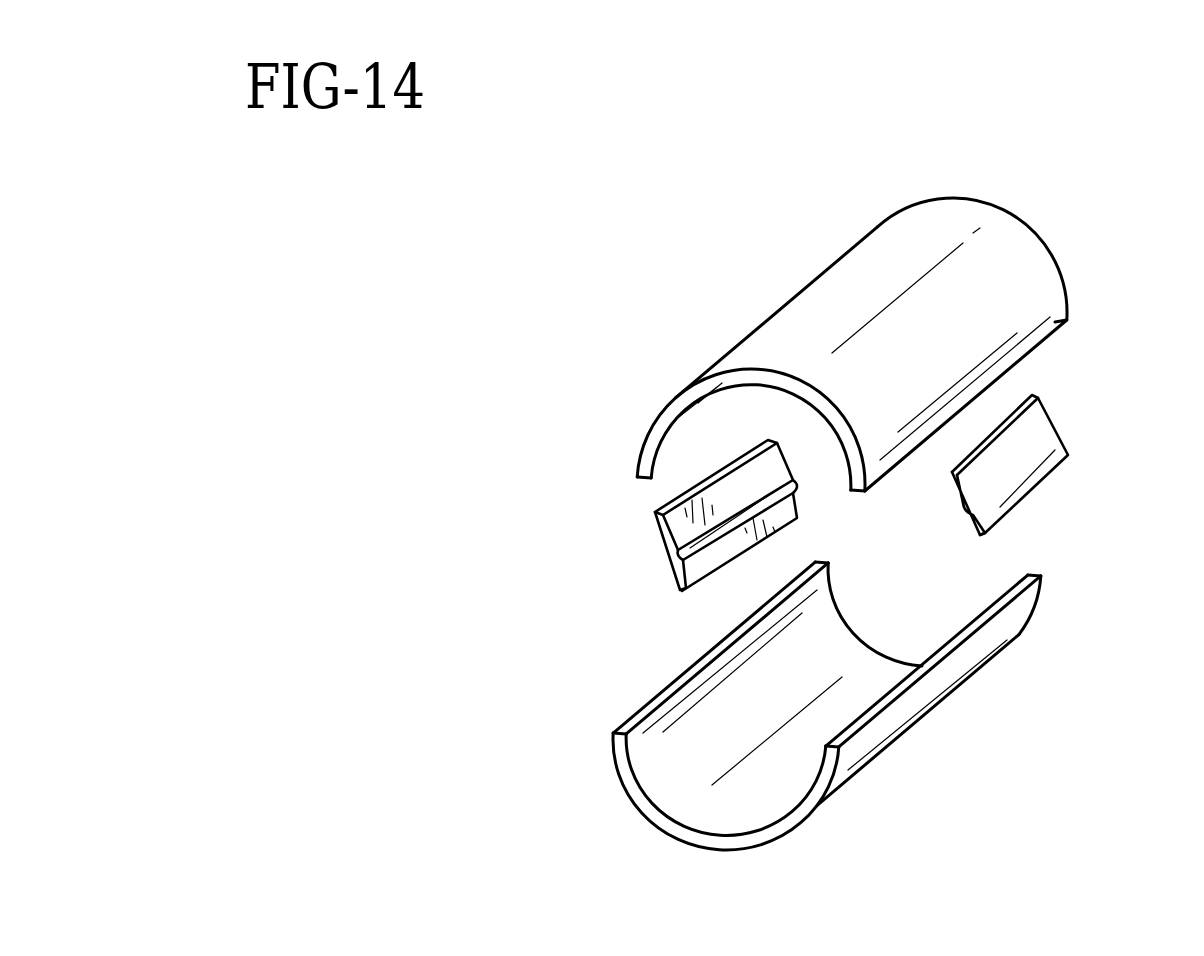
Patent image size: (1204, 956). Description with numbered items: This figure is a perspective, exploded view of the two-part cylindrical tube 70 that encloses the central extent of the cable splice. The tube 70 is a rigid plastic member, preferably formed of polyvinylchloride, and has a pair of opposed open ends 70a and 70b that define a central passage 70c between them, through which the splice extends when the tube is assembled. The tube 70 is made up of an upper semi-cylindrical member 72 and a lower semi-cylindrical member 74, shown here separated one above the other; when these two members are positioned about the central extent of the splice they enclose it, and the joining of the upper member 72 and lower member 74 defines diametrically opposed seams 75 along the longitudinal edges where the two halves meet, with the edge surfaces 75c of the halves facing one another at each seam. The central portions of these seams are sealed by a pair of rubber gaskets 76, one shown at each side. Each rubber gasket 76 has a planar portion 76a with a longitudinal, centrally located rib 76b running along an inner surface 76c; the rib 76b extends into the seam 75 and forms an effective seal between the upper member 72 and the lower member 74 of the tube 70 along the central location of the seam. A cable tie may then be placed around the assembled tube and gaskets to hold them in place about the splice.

The two-part cylindrical tube 70 is at (1044, 193).
The open end 70a is at (653, 813).
The open end 70b is at (1057, 262).
The central passage 70c is at (737, 795).
The upper semi-cylindrical member 72 is at (867, 270).
The lower semi-cylindrical member 74 is at (893, 721).
The seam 75 is at (653, 705).
The edge surface of shell half 75c is at (1046, 338).
The rubber gasket 76 is at (651, 552).
The planar portion 76a is at (650, 537).
The rib 76b is at (672, 556).
The inner surface 76c is at (762, 524).